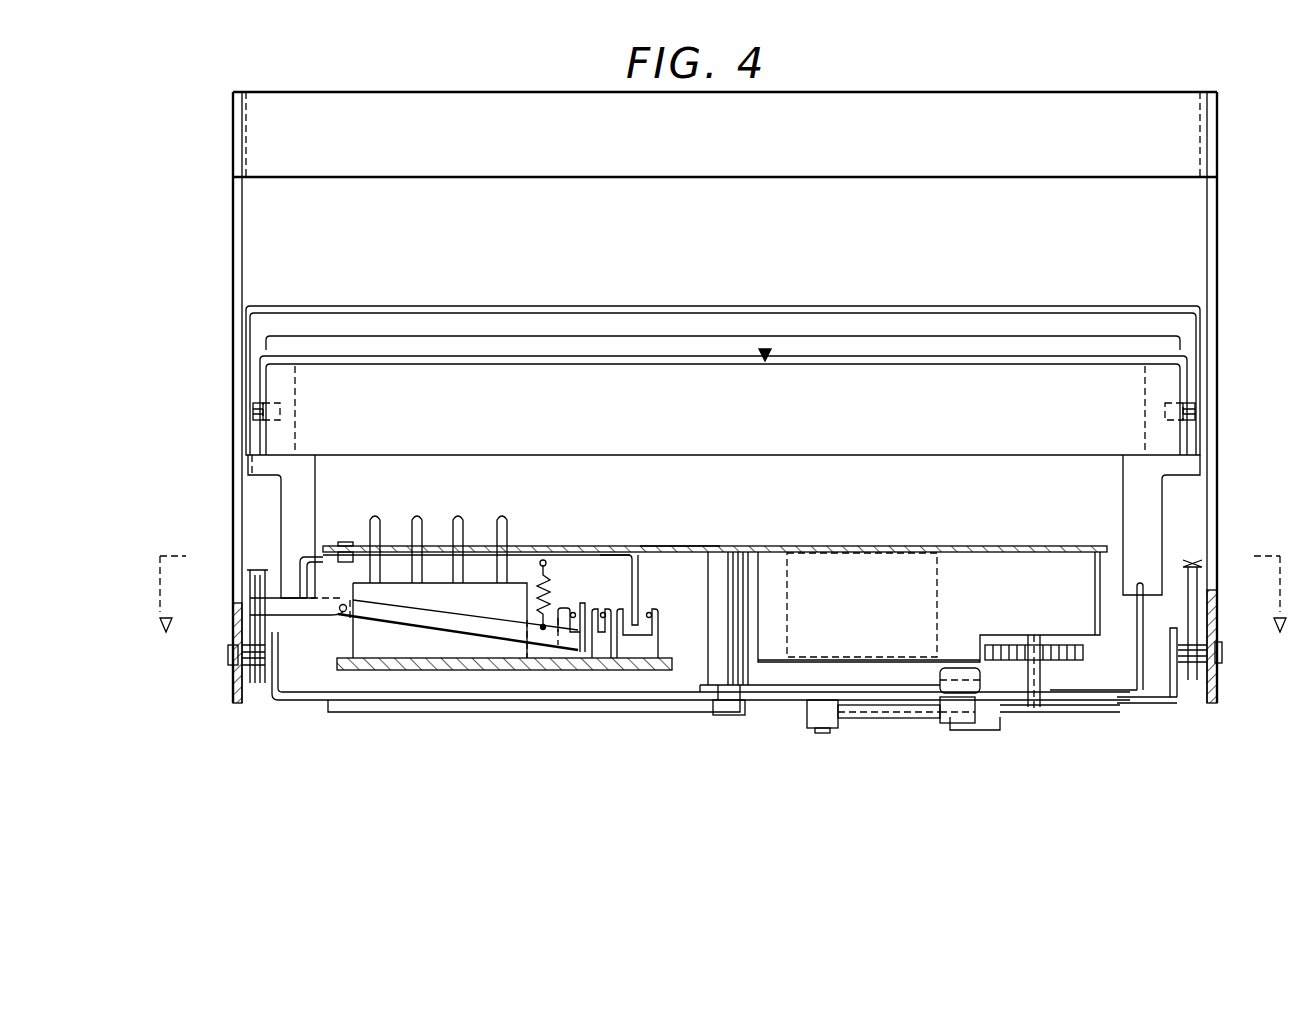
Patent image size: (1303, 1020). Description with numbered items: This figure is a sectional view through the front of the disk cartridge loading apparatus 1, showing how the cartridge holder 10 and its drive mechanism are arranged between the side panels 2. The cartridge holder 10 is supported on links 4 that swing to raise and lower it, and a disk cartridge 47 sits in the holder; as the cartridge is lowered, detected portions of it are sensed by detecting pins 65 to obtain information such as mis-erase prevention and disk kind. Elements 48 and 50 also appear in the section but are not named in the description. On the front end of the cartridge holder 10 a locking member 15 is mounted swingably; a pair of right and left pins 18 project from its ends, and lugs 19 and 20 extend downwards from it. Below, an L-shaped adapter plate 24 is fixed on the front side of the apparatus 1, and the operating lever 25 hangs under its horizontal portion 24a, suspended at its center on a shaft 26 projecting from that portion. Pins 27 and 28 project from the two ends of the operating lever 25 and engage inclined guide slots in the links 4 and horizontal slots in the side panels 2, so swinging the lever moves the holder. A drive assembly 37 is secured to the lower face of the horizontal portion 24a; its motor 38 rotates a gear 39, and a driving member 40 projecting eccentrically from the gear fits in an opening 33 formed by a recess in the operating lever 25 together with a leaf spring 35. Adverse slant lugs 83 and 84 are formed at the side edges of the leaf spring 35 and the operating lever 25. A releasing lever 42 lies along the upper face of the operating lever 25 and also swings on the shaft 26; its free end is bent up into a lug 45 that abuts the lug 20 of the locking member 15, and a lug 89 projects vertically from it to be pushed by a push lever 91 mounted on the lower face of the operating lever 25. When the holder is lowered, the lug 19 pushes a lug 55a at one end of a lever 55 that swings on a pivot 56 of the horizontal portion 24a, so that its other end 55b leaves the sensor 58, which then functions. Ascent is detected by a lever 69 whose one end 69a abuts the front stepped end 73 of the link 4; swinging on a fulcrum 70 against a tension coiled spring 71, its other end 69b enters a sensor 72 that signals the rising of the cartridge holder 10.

The apparatus 1 is at (215, 208).
The side panel 2 is at (238, 288).
The link 4 is at (252, 628).
The cartridge holder 10 is at (668, 336).
The locking member 15 is at (600, 306).
The pins 18 is at (253, 410).
The lug 19 is at (285, 485).
The lug 20 is at (1160, 520).
The adapter plate 24 is at (905, 546).
The horizontal portion 24a is at (700, 546).
The operating lever 25 is at (470, 700).
The shaft 26 is at (738, 560).
The pin 27 is at (232, 655).
The pin 28 is at (1222, 652).
The opening 33 is at (1070, 700).
The leaf spring 35 is at (850, 705).
The drive assembly 37 is at (956, 575).
The motor 38 is at (858, 575).
The gear 39 is at (1010, 645).
The driving member 40 is at (1035, 708).
The releasing lever 42 is at (758, 690).
The lug 45 is at (1150, 650).
The disk cartridge 47 is at (766, 350).
The cassette 48 is at (855, 380).
The reel hub 50 is at (295, 395).
The lever 55 is at (543, 560).
The lug 55a is at (300, 570).
The other end 55b is at (635, 565).
The pivot 56 is at (345, 542).
The sensor 58 is at (640, 645).
The detecting pin 65 is at (457, 522).
The lever 69 is at (388, 620).
The one end 69a is at (250, 600).
The other end 69b is at (570, 640).
The fulcrum 70 is at (338, 612).
The tension coiled spring 71 is at (548, 590).
The sensor 72 is at (595, 640).
The front stepped end 73 is at (250, 607).
The slant lug 83 is at (945, 705).
The slant lug 84 is at (955, 672).
The lug 89 is at (988, 722).
The push lever 91 is at (885, 718).